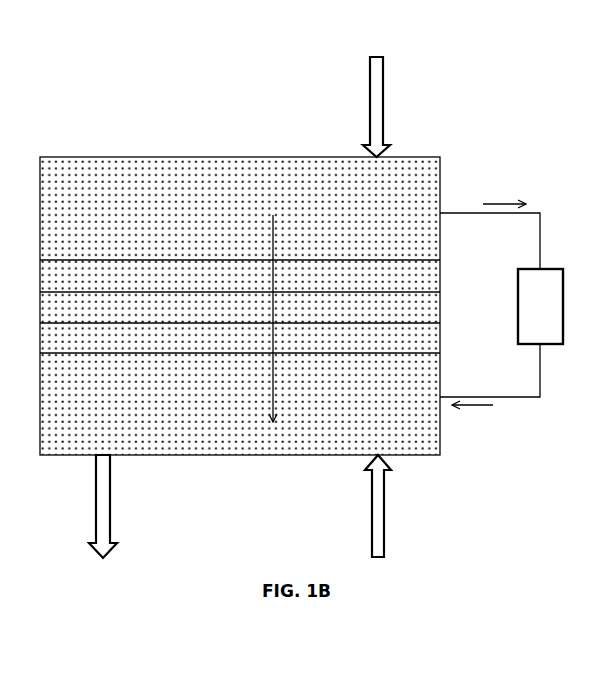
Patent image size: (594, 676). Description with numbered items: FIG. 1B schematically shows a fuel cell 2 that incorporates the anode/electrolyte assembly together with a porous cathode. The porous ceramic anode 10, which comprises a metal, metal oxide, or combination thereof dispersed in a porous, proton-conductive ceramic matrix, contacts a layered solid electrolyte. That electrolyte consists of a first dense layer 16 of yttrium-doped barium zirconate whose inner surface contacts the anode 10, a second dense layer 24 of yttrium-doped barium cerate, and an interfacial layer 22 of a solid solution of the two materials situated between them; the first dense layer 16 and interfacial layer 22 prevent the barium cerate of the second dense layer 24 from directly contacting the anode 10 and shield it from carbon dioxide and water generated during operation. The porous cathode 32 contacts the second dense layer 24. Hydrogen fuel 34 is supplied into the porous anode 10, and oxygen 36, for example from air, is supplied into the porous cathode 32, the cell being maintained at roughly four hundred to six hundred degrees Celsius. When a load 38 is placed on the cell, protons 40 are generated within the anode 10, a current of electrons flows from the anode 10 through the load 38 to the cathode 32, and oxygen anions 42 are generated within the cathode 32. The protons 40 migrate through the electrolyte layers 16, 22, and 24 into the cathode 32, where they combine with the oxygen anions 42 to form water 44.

The fuel cell 2 is at (250, 85).
The porous ceramic anode 10 is at (158, 180).
The first dense layer 16 is at (430, 273).
The interfacial layer 22 is at (430, 308).
The second dense layer 24 is at (430, 343).
The porous cathode 32 is at (273, 440).
The hydrogen fuel 34 is at (388, 47).
The oxygen 36 is at (392, 568).
The load 38 is at (548, 325).
The protons 40 is at (293, 225).
The oxygen anions 42 is at (380, 420).
The water 44 is at (113, 557).